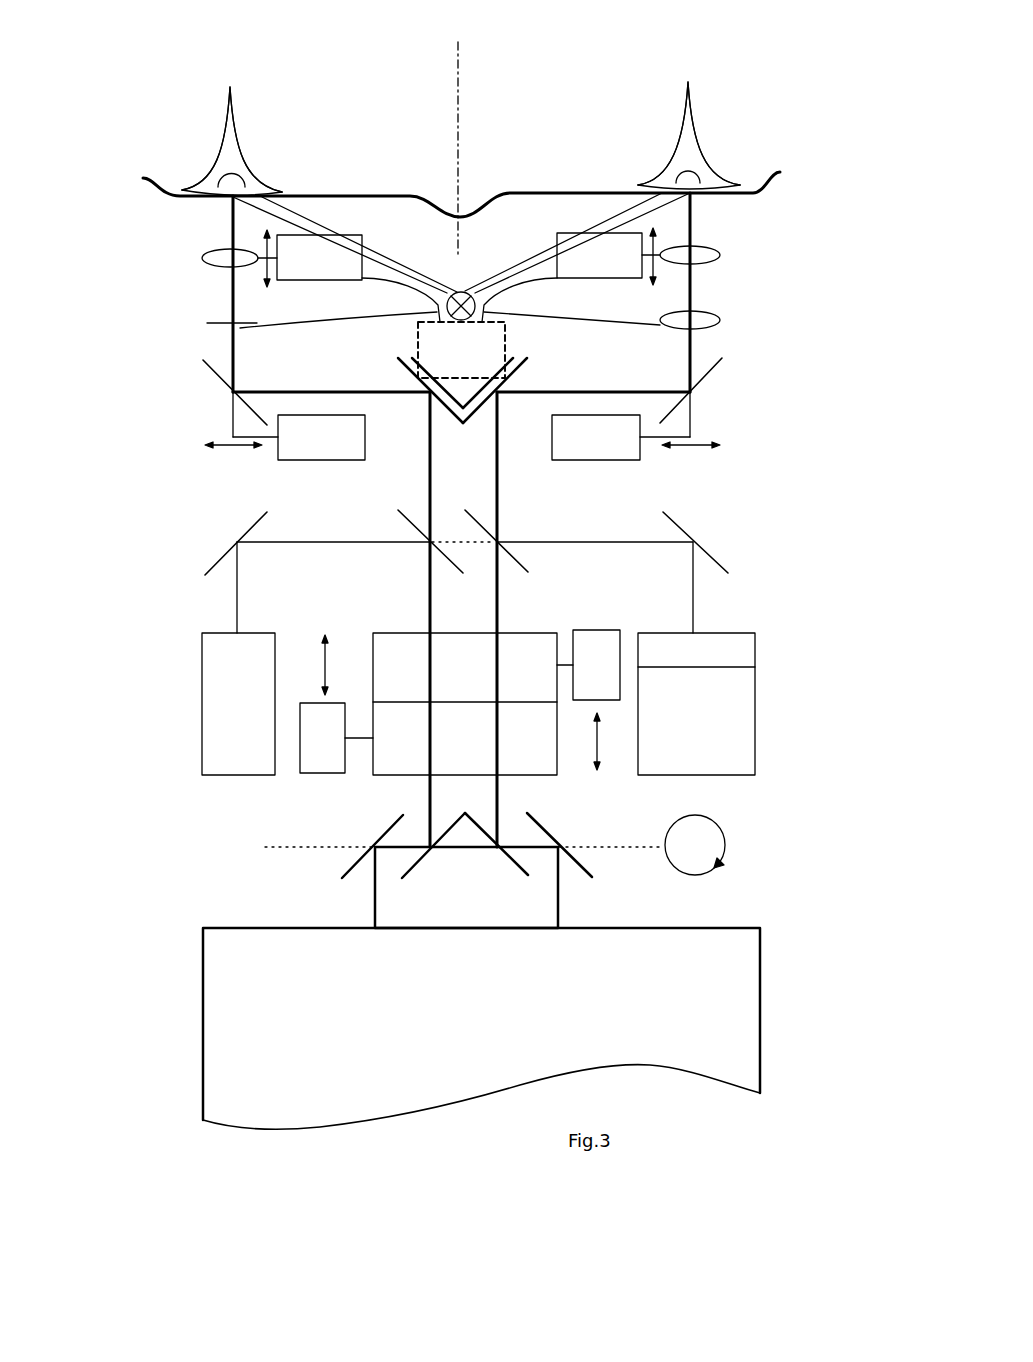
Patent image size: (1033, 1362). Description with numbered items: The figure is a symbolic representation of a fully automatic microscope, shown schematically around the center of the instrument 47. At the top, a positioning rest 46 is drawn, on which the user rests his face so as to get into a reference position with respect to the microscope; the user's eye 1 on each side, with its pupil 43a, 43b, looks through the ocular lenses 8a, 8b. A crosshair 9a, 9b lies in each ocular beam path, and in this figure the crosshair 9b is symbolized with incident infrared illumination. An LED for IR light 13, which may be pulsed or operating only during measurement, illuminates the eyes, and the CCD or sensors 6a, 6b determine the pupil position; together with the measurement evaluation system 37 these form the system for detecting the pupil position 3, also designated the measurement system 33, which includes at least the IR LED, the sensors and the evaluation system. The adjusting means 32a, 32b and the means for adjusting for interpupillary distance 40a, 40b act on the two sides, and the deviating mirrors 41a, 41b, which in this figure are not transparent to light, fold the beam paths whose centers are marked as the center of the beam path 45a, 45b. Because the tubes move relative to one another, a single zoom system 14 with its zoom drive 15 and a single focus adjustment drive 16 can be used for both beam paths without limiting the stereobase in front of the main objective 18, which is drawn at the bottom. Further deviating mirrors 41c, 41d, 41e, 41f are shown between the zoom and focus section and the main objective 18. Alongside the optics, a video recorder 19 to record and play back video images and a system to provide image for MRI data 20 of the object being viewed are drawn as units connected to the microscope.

The user's eye 1 is at (228, 147).
The pupil 43a is at (228, 176).
The pupil 43b is at (707, 157).
The adjusting means 32a is at (353, 230).
The adjusting means 32b is at (563, 235).
The positioning rest 46 is at (368, 190).
The center of the instrument 47 is at (453, 117).
The LED for IR light 13 is at (463, 287).
The ocular lens 8a is at (217, 258).
The ocular lens 8b is at (703, 255).
The crosshair 9a is at (207, 322).
The crosshair 9b is at (720, 313).
The system for detecting the pupil position 3 is at (461, 335).
The measurement system 33 is at (461, 350).
The measurement evaluation system 37 is at (475, 375).
The CCD or sensor 6a is at (398, 358).
The CCD or sensor 6b is at (525, 358).
The deviating mirror 41a is at (250, 410).
The deviating mirror 41b is at (680, 410).
The means for adjusting for interpupillary distance 40a is at (285, 426).
The means for adjusting for interpupillary distance 40b is at (636, 426).
The center of the beam path 45a is at (428, 485).
The center of the beam path 45b is at (499, 482).
The video recorder 19 is at (238, 704).
The focus adjustment drive 16 is at (336, 704).
The zoom system 14 is at (545, 663).
The zoom drive 15 is at (588, 700).
The system to provide image for MRI data 20 is at (696, 704).
The deviating mirror 41c is at (380, 828).
The deviating mirror 41d is at (548, 828).
The deviating mirror 41e is at (403, 870).
The deviating mirror 41f is at (527, 870).
The main objective 18 is at (745, 962).